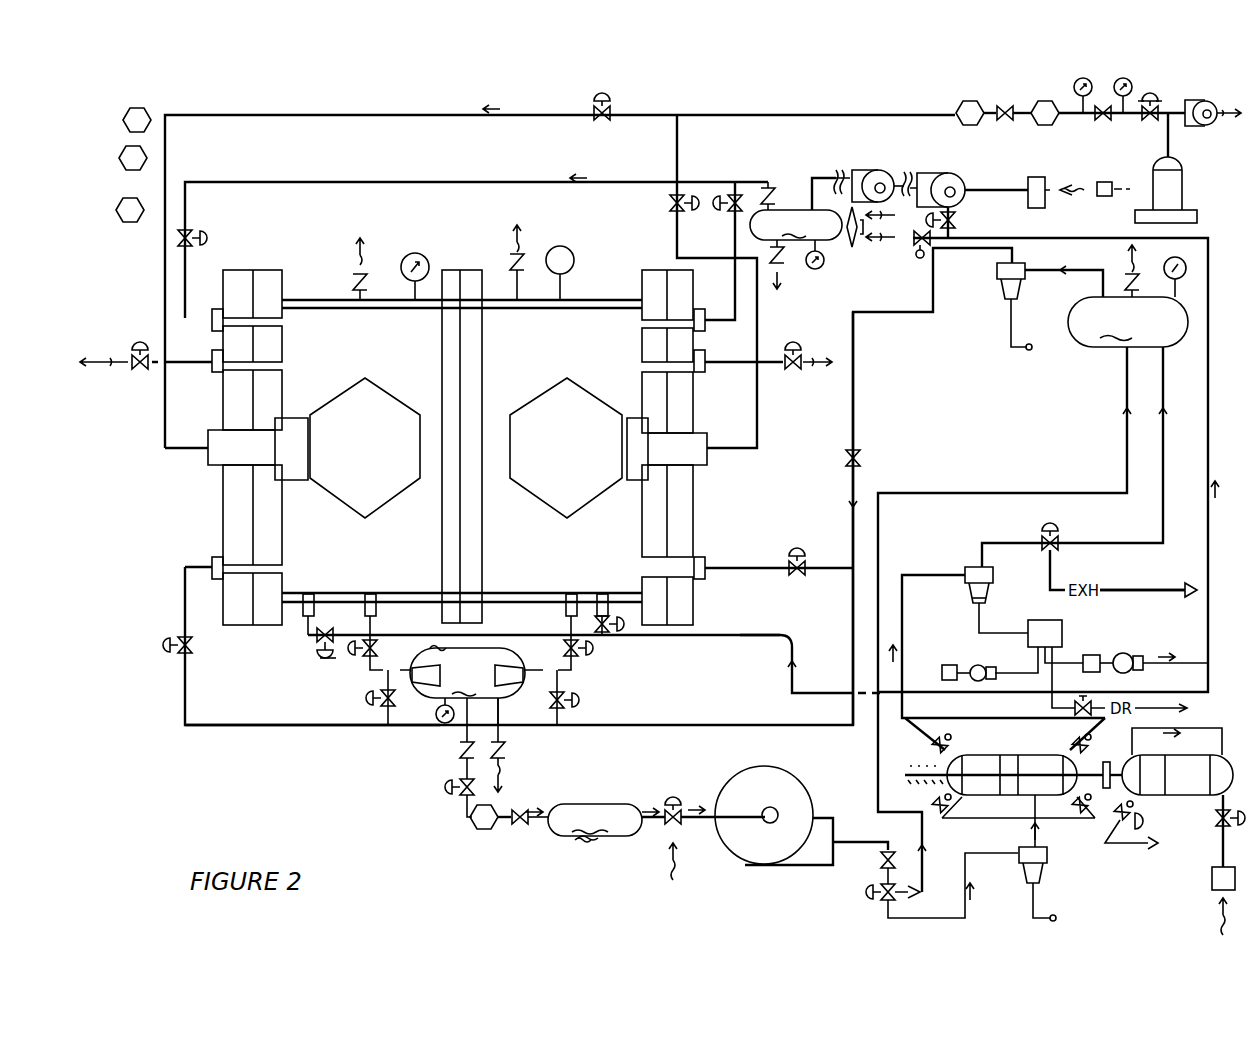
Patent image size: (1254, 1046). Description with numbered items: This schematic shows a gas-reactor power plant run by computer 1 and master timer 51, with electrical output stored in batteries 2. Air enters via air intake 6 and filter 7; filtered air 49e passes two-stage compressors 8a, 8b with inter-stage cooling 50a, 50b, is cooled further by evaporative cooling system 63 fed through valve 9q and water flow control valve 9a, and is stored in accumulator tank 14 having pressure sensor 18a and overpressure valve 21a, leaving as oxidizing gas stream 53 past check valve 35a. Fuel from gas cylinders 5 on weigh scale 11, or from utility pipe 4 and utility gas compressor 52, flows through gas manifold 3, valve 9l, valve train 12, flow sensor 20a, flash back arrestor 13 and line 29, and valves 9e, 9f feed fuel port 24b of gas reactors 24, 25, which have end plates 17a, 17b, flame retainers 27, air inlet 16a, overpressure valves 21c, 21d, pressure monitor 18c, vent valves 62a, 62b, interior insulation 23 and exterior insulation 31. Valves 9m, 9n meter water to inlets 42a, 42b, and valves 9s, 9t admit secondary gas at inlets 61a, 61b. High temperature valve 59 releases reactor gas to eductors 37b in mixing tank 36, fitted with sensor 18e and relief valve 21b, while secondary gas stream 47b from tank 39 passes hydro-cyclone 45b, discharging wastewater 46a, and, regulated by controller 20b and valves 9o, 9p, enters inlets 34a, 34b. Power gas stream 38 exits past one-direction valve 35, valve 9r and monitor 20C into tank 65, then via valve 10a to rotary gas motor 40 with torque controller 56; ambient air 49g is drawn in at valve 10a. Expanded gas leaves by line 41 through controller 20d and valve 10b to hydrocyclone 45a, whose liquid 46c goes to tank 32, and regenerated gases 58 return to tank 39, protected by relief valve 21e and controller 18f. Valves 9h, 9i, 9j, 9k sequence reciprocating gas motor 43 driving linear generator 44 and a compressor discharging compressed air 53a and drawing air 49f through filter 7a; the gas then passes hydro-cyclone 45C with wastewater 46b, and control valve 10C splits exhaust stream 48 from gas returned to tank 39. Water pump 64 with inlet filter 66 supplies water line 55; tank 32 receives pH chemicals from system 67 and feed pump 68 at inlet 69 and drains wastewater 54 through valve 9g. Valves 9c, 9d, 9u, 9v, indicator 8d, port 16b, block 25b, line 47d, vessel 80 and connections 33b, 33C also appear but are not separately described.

The computer 1 is at (135, 108).
The bank of batteries 2 is at (130, 146).
The master timer 51 is at (130, 198).
The fuel gas line 29 is at (256, 115).
The oxidizing gas stream 53 is at (378, 182).
The control valve 9d is at (208, 234).
The gas reactor 24 is at (283, 270).
The over pressure valve 21c is at (356, 282).
The pressure control monitor 18c is at (415, 253).
The over pressure valve 21d is at (519, 252).
The indicator 8d is at (566, 248).
The gas reactor 25 is at (642, 270).
The fuel valve 9e is at (607, 96).
The control valve 9c is at (695, 198).
The fuel valve 9f is at (722, 207).
The reverse flow prevention valve 35a is at (770, 188).
The inter-stage cooling 50a is at (836, 176).
The air compressor 8a is at (866, 172).
The inter-stage cooling 50b is at (908, 180).
The air compressor 8b is at (948, 172).
The filter 7 is at (1034, 177).
The filtered ambient air stream 49e is at (1028, 200).
The air intake 6 is at (1103, 197).
The flash back arrestor 13 is at (968, 126).
The flow sensor 20a is at (996, 108).
The fuel gas valve train 12 is at (1042, 126).
The gas manifold 3 is at (1099, 121).
The valve 9l is at (1148, 121).
The utility gas compressor 52 is at (1204, 103).
The utility pipe 4 is at (1230, 110).
The liquid natural gas cylinders 5 is at (1183, 186).
The electronic weigh scale 11 is at (1197, 216).
The accumulator tank 14 is at (796, 209).
The water injection valve 9q is at (950, 216).
The water flow control valve 9a is at (921, 252).
The evaporative cooling system 63 is at (855, 250).
The pressure sensor 18a is at (815, 270).
The overpressure valve 21a is at (780, 290).
The hydro-cyclone 45b is at (1008, 292).
The wastewater 46a is at (1024, 350).
The secondary gas tank 39 is at (1128, 322).
The over pressure release valve 21e is at (1130, 273).
The pressure monitor and controller 18f is at (1180, 257).
The secondary gas stream 47b is at (856, 396).
The flow controller 20b is at (860, 458).
The vent valve 62a is at (132, 367).
The vent valve 62b is at (800, 368).
The air inlet 16a is at (213, 328).
The port 16b is at (705, 328).
The fuel port 24b is at (208, 456).
The header block 25b is at (708, 452).
The pressure-tight end plate 17a is at (222, 506).
The pressure-tight end plate 17b is at (694, 506).
The flame retainer 27 is at (366, 517).
The secondary gas inlet 61a is at (212, 562).
The secondary gas inlet 61b is at (705, 561).
The secondary gas valve 9t is at (797, 551).
The water inlet 42b is at (601, 597).
The water valve 9n is at (625, 624).
The water line 55 is at (738, 635).
The regenerated gases 58 is at (1036, 493).
The control valve 10C is at (1050, 530).
The line 47d is at (920, 543).
The hydro-cyclone 45C is at (964, 568).
The wastewater 46b is at (979, 626).
The waste liquid tank 32 is at (1036, 620).
The inlet filter 66 is at (1105, 641).
The water pump 64 is at (1122, 653).
The exhaust gas stream 48 is at (1162, 591).
The chemical handling system 67 is at (948, 665).
The chemical feed pump 68 is at (980, 665).
The chemical inlet 69 is at (1038, 652).
The automatic valve 9g is at (1086, 703).
The wastewater 54 is at (1198, 716).
The secondary gas valve 9s is at (160, 645).
The water inlet 42a is at (305, 631).
The connector 33b is at (372, 614).
The interior insulation 23 is at (412, 657).
The exterior insulation 31 is at (434, 648).
The eductor 37b is at (468, 675).
The mixing tank 36 is at (467, 686).
The high temperature valve 59 is at (327, 659).
The water valve 9m is at (320, 659).
The control valve 9o is at (365, 699).
The control valve 9p is at (579, 700).
The inlet 34a is at (440, 714).
The inlet 34b is at (500, 705).
The pressure monitor and sensor 18e is at (440, 723).
The one direction flow valve 35 is at (460, 752).
The over pressure relief valve 21b is at (506, 745).
The valve 9r is at (444, 788).
The torque controller 56 is at (490, 810).
The Power Gas stream 38 is at (471, 822).
The flow monitor 20C is at (516, 826).
The Power Gas tank 65 is at (595, 822).
The suction valve 10a is at (673, 796).
The rotary gas motor 40 is at (769, 795).
The discharge line 41 is at (845, 840).
The ambient air 49g is at (676, 862).
The controller 20d is at (881, 862).
The discharge valve 10b is at (882, 896).
The control valve 9j is at (932, 746).
The double acting reciprocating gas motor 43 is at (1000, 746).
The control valve 9k is at (1074, 746).
The vessel 80 is at (1188, 761).
The linear generator 44 is at (932, 781).
The control valve 9h is at (947, 807).
The control valve 9i is at (1074, 805).
The hydrocyclone 45a is at (1047, 856).
The liquid line 46c is at (1036, 913).
The valve 9u is at (1132, 813).
The compressed air 53a is at (1179, 845).
The valve 9v is at (1210, 838).
The filter 7a is at (1212, 878).
The ambient air 49f is at (1222, 920).
The connector 33C is at (569, 612).